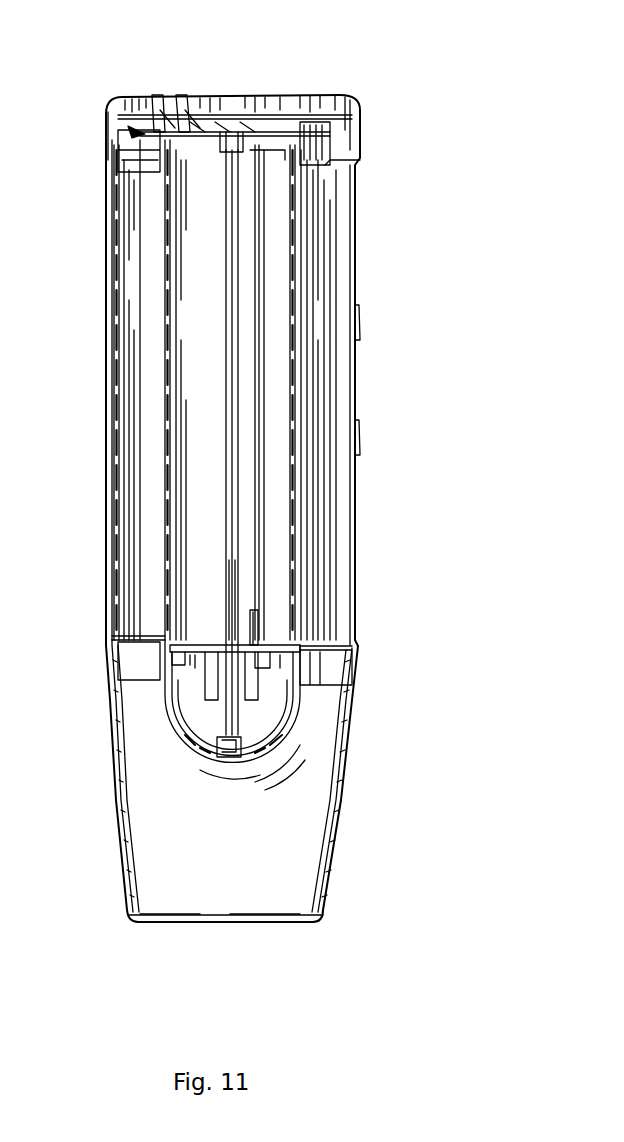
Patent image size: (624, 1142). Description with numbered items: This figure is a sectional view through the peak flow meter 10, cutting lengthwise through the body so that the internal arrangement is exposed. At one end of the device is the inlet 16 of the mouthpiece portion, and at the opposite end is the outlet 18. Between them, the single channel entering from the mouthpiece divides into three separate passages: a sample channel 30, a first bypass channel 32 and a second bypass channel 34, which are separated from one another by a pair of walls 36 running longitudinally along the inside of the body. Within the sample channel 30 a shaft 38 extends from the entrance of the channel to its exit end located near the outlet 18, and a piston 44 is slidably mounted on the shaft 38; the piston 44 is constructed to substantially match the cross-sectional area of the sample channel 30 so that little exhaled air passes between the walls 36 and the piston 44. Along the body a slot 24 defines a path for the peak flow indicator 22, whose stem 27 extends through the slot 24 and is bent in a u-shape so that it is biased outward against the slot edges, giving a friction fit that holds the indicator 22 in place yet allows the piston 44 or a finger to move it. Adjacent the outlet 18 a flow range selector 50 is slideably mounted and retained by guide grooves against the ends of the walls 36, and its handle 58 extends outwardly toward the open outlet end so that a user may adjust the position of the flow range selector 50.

The peak flow meter 10 is at (395, 297).
The inlet 16 is at (258, 925).
The outlet 18 is at (275, 92).
The peak flow indicator 22 is at (262, 622).
The slot 24 is at (262, 270).
The stem 27 is at (262, 645).
The sample channel 30 is at (208, 374).
The first bypass channel 32 is at (275, 380).
The second bypass channel 34 is at (147, 285).
The walls 36 is at (165, 478).
The shaft 38 is at (230, 557).
The piston 44 is at (290, 725).
The flow range selector 50 is at (130, 130).
The handle 58 is at (157, 95).